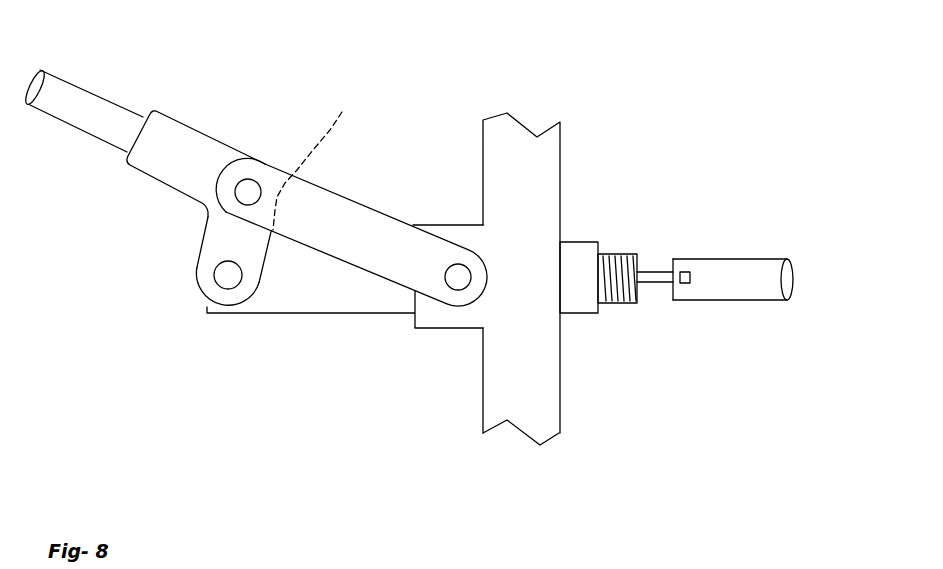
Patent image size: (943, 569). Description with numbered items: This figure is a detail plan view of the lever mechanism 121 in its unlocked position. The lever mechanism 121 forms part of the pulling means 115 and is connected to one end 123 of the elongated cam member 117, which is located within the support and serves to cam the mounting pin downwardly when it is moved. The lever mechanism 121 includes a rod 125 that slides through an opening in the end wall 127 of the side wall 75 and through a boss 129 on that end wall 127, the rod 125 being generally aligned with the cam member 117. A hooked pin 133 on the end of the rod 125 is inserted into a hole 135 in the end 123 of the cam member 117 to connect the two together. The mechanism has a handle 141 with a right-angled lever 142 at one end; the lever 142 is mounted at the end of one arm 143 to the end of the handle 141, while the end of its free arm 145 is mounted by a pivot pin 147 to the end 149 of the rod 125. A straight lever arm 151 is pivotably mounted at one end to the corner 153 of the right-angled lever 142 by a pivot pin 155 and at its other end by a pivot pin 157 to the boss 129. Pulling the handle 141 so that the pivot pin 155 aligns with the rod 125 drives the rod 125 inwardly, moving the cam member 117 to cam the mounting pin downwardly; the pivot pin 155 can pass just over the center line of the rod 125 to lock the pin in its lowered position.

The side wall 75 is at (563, 447).
The pulling means 115 is at (617, 338).
The cam member 117 is at (767, 238).
The lever mechanism 121 is at (138, 284).
The end of the cam member 123 is at (673, 292).
The rod 125 is at (577, 250).
The end wall 127 is at (482, 128).
The boss 129 is at (468, 328).
The hooked pin 133 is at (655, 277).
The hole 135 is at (690, 283).
The handle 141 is at (97, 107).
The right-angled lever 142 is at (274, 156).
The arm 143 is at (187, 125).
The free arm 145 is at (252, 252).
The pivot pin 147 is at (228, 283).
The end of the rod 149 is at (207, 307).
The straight lever arm 151 is at (357, 210).
The corner 153 is at (322, 157).
The pivot pin 155 is at (248, 188).
The pivot pin 157 is at (456, 281).